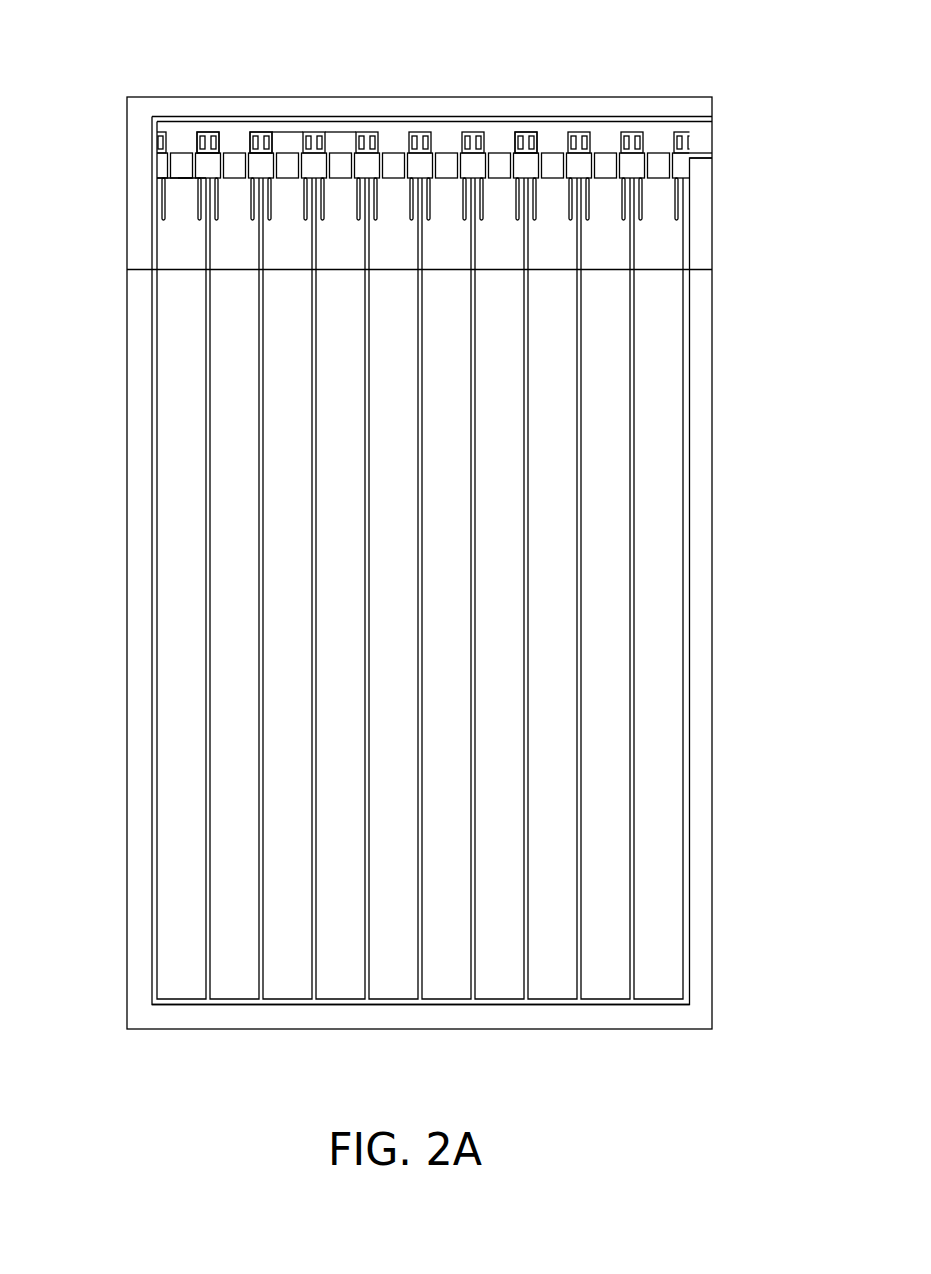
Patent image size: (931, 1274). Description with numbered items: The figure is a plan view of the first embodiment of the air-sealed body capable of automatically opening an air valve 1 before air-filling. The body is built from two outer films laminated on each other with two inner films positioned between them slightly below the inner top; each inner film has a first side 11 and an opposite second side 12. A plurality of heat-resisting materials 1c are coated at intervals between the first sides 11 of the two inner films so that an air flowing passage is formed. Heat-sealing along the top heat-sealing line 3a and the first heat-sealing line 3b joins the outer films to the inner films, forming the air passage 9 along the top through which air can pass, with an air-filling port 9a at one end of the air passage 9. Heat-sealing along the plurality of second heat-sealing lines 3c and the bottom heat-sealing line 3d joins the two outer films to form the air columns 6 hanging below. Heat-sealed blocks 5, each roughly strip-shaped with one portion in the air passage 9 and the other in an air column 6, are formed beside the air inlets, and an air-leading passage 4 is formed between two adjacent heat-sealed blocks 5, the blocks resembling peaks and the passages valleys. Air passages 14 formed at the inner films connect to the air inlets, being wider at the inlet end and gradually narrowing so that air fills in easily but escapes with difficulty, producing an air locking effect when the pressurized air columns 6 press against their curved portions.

The air-sealed body capable of automatically opening an air valve 1 is at (741, 86).
The heat-resisting material 1c is at (176, 156).
The top heat-sealing line 3a is at (392, 120).
The first heat-sealing line 3b is at (657, 153).
The second heat-sealing line 3c is at (685, 402).
The bottom heat-sealing line 3d is at (181, 1002).
The air-leading passage 4 is at (283, 140).
The heat-sealed block 5 is at (208, 130).
The air column 6 is at (602, 570).
The air passage 9 is at (527, 128).
The air-filling port 9a is at (706, 127).
The first side 11 is at (697, 165).
The second side 12 is at (170, 188).
The air passage 14 is at (185, 190).